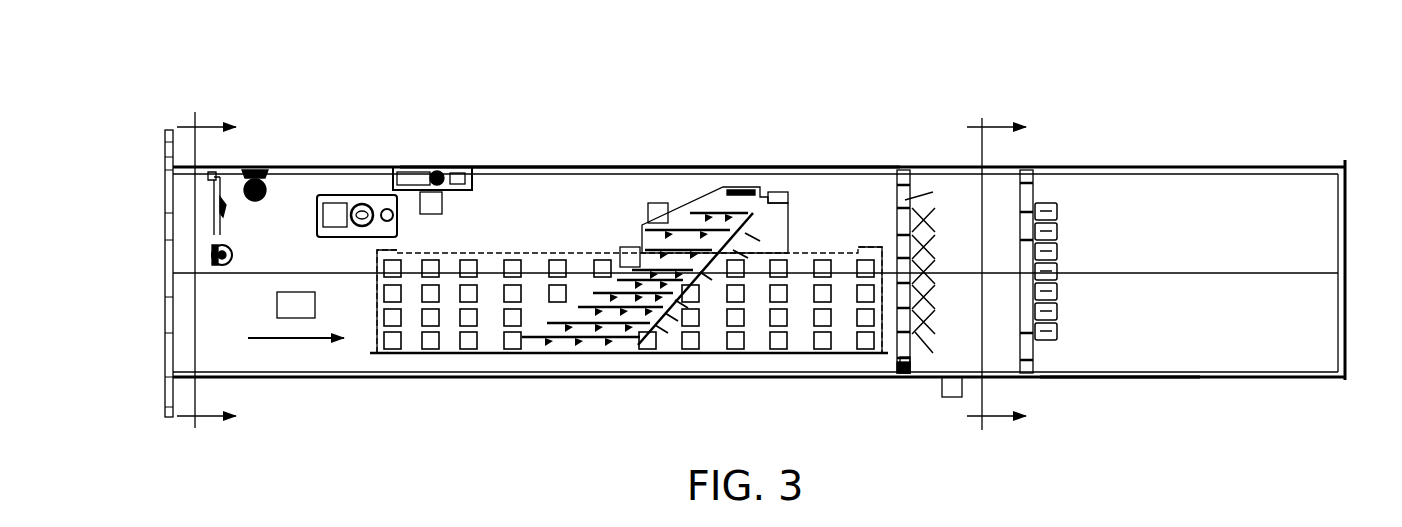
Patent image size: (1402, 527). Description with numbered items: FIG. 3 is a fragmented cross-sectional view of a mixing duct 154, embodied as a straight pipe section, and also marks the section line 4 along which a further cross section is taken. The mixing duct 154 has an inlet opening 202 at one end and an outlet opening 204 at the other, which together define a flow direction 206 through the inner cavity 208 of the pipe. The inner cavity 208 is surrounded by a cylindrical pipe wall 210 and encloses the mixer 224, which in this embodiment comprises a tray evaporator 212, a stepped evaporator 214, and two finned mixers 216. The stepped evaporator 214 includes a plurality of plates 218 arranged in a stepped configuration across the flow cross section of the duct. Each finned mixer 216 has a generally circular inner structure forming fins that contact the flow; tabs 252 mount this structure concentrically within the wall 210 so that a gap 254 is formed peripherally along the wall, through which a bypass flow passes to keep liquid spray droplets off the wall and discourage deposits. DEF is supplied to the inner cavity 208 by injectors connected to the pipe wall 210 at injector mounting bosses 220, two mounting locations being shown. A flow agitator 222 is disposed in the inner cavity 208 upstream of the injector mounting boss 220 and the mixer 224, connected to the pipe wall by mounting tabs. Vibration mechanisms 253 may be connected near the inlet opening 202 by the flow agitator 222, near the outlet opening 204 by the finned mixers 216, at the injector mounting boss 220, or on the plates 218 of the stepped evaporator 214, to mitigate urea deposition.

The section line 4- 4 is at (603, 272).
The mixing duct 154 is at (1119, 145).
The inlet opening 202 is at (148, 306).
The outlet opening 204 is at (1364, 337).
The flow direction 206 is at (296, 353).
The inner cavity 208 is at (1210, 244).
The cylindrical pipe wall 210 is at (1103, 378).
The tray evaporator 212 is at (490, 340).
The stepped evaporator 214 is at (556, 138).
The finned mixer 216 is at (904, 200).
The plates 218 is at (680, 227).
The injector mounting boss 220 is at (363, 200).
The flow agitator 222 is at (222, 187).
The mixer 224 is at (720, 146).
The tabs 252 is at (905, 376).
The vibration mechanism 253 is at (334, 212).
The gap 254 is at (890, 368).